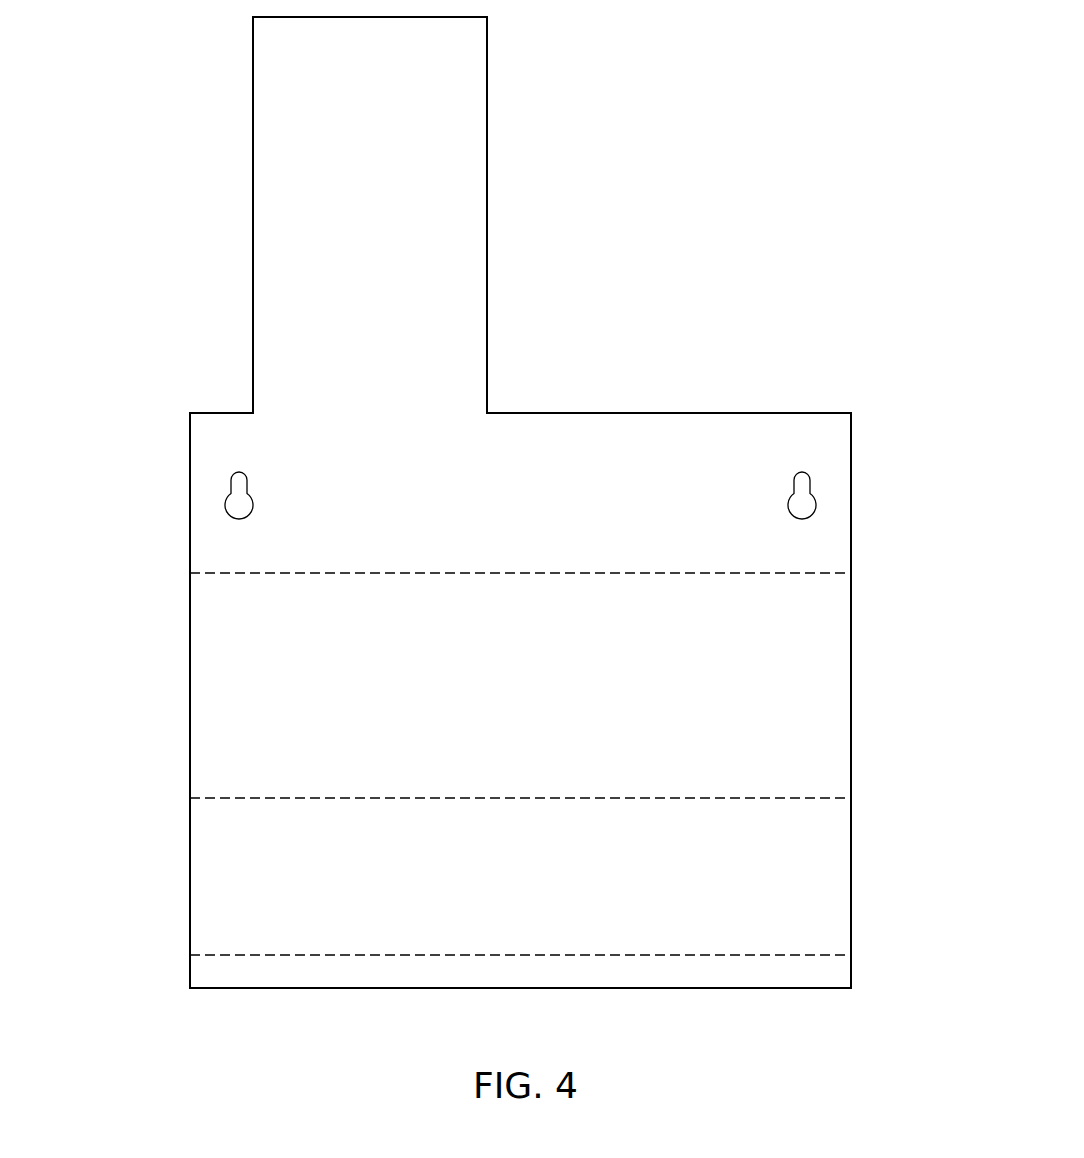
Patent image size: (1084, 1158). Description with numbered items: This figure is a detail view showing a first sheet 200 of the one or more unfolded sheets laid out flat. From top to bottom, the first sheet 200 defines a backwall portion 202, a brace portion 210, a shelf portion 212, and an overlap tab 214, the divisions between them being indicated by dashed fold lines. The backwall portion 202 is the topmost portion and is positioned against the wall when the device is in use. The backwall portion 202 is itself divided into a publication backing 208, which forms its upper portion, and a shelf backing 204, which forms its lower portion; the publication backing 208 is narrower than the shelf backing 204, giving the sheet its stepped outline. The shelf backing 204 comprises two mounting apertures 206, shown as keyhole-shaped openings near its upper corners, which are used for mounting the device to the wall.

The first sheet 200 is at (722, 127).
The backwall portion 202 is at (163, 14).
The shelf backing 204 is at (864, 410).
The mounting apertures 206 is at (233, 472).
The publication backing 208 is at (508, 15).
The brace portion 210 is at (864, 580).
The shelf portion 212 is at (182, 799).
The overlap tab 214 is at (858, 955).